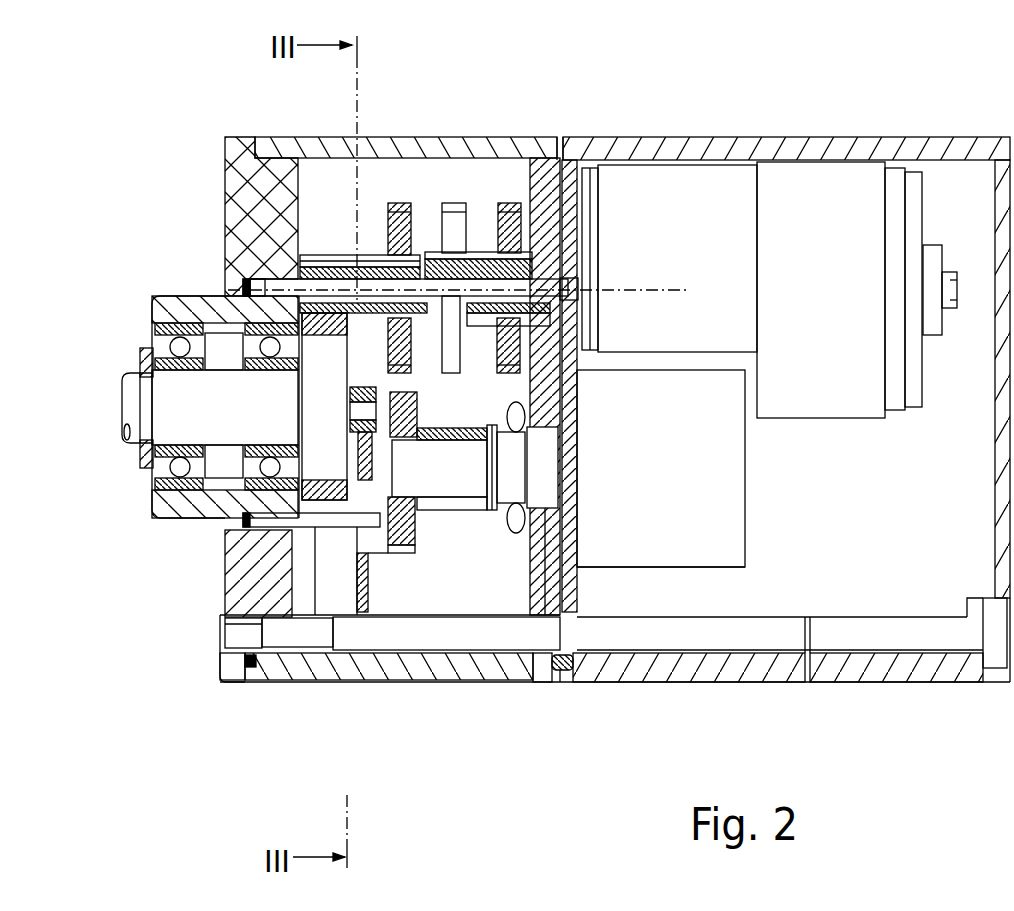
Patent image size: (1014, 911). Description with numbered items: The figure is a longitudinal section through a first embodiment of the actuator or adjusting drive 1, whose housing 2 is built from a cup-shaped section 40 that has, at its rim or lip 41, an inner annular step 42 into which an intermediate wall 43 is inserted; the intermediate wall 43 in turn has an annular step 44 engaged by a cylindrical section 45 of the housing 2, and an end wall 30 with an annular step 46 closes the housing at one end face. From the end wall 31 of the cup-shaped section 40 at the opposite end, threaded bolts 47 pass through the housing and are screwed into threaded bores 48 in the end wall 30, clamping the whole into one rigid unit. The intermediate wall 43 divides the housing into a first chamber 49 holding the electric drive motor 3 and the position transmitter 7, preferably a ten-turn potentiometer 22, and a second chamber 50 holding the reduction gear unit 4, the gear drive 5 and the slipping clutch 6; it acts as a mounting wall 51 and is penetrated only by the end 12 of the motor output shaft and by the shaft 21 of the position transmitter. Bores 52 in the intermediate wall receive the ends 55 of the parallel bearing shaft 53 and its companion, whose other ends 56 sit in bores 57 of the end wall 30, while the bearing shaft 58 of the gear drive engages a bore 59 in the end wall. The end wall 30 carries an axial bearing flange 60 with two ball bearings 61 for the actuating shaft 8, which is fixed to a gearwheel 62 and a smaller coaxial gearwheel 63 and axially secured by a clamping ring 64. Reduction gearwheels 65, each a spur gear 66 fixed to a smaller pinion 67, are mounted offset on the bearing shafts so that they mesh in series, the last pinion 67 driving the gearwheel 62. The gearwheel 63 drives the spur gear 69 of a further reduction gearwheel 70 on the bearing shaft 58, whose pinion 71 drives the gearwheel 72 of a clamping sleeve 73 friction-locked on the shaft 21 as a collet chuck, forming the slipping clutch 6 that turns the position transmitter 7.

The actuator or adjusting drive 1 is at (592, 132).
The housing 2 is at (712, 146).
The electric drive motor 3 is at (820, 231).
The reduction transmission or gear unit 4 is at (413, 180).
The gear drive 5 is at (338, 563).
The slipping clutch 6 is at (430, 515).
The position transmitter 7 is at (680, 535).
The actuating shaft 8 is at (140, 420).
The end of output shaft 12 is at (578, 366).
The shaft of the position transmitter 21 is at (467, 453).
The ten-turn potentiometer 22 is at (723, 460).
The end wall 30 is at (240, 580).
The end wall of the cup-shaped section 31 is at (1000, 502).
The cup-shaped section 40 is at (907, 682).
The rim or lip 41 is at (588, 683).
The inner annular step 42 is at (563, 683).
The intermediate wall 43 is at (565, 583).
The annular step 44 is at (533, 682).
The cylindrical section 45 is at (415, 670).
The annular step 46 is at (263, 677).
The threaded bolts 47 is at (785, 632).
The threaded bores 48 is at (236, 632).
The first chamber 49 is at (975, 198).
The second chamber 50 is at (340, 202).
The mounting wall 51 is at (465, 512).
The bores 52 is at (556, 263).
The bearing shaft 53 is at (362, 200).
The ends of bearing shafts 55 is at (557, 272).
The other ends of bearing shafts 56 is at (263, 290).
The bores 57 is at (250, 268).
The bearing shaft of the gear drive 58 is at (323, 520).
The bore 59 is at (255, 520).
The axial bearing flange 60 is at (170, 297).
The ball bearings 61 is at (205, 372).
The gearwheel 62 is at (320, 377).
The coaxial gearwheel 63 is at (353, 398).
The clamping ring 64 is at (143, 352).
The reduction gearwheels 65 is at (427, 202).
The spur gear 66 is at (528, 190).
The pinion 67 is at (316, 255).
The spur gear 69 is at (365, 615).
The further reduction gearwheel 70 is at (373, 575).
The pinion 71 is at (413, 558).
The gearwheel 72 is at (420, 410).
The clamping sleeve 73 is at (552, 538).